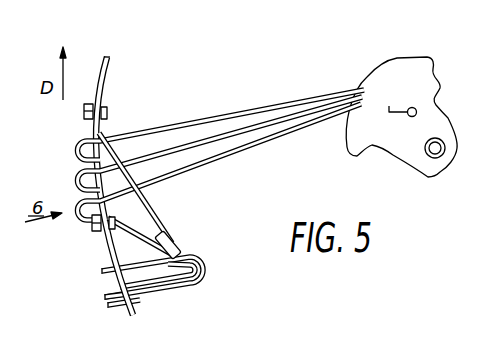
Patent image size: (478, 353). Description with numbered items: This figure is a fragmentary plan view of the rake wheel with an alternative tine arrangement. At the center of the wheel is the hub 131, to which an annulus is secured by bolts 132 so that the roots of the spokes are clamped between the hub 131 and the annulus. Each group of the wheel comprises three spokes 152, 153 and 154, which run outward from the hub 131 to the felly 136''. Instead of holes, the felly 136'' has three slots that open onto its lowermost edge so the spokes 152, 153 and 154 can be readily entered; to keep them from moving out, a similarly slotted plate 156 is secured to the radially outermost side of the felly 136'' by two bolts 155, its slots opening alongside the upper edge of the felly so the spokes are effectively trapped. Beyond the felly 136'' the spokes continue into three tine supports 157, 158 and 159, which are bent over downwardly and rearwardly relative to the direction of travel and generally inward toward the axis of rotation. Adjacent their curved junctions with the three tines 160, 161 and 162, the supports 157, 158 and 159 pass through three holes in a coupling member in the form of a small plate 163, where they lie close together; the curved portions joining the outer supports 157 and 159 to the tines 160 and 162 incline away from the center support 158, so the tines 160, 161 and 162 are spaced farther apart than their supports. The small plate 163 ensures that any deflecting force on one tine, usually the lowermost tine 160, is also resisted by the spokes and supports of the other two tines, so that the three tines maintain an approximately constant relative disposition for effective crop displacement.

The hub 131 is at (409, 68).
The bolts 132 is at (400, 97).
The felly 136'' is at (135, 181).
The spoke 152 is at (202, 119).
The spoke 153 is at (161, 150).
The spoke 154 is at (266, 140).
The bolts 155 is at (83, 112).
The slotted plate 156 is at (93, 101).
The tine support 157 is at (127, 196).
The tine support 158 is at (133, 210).
The tine support 159 is at (124, 232).
The tine 160 is at (100, 278).
The tine 161 is at (100, 299).
The tine 162 is at (106, 308).
The small plate 163 is at (180, 241).